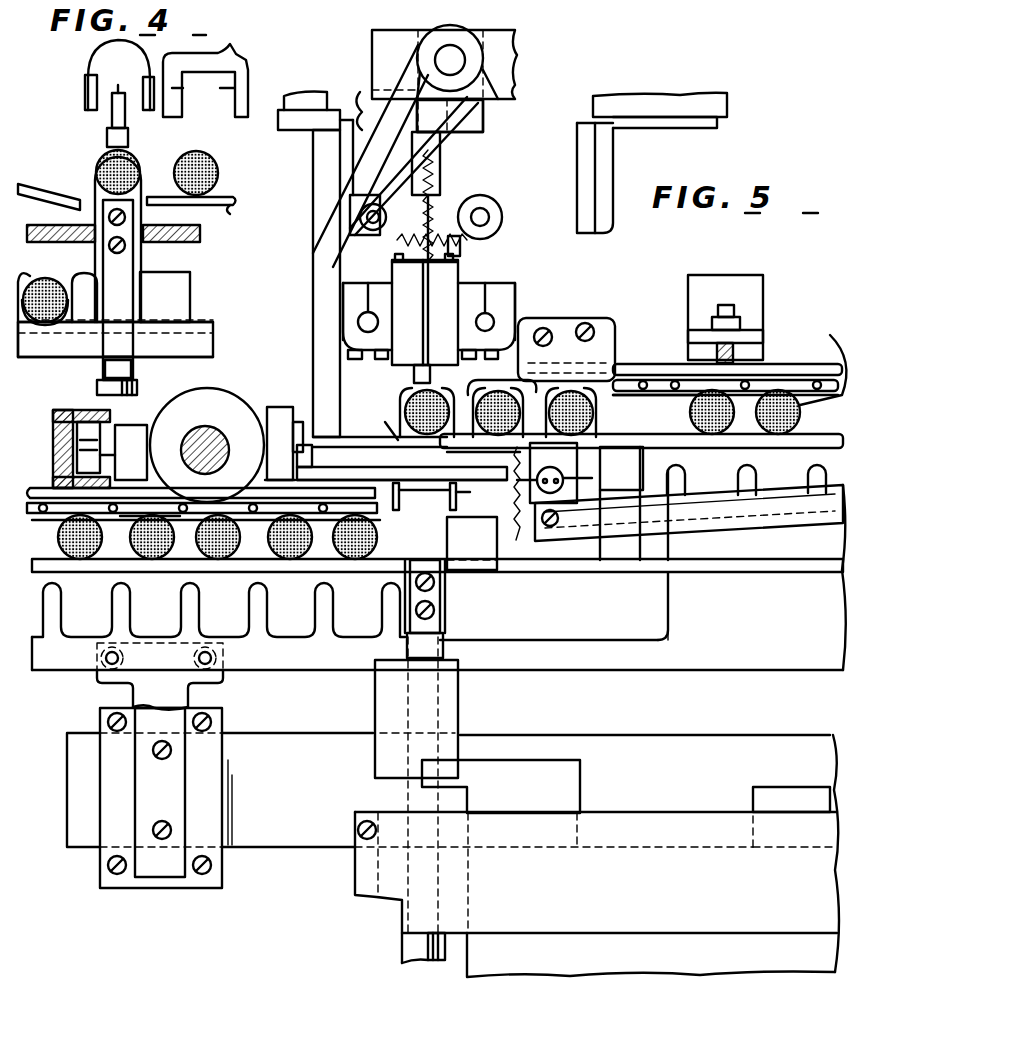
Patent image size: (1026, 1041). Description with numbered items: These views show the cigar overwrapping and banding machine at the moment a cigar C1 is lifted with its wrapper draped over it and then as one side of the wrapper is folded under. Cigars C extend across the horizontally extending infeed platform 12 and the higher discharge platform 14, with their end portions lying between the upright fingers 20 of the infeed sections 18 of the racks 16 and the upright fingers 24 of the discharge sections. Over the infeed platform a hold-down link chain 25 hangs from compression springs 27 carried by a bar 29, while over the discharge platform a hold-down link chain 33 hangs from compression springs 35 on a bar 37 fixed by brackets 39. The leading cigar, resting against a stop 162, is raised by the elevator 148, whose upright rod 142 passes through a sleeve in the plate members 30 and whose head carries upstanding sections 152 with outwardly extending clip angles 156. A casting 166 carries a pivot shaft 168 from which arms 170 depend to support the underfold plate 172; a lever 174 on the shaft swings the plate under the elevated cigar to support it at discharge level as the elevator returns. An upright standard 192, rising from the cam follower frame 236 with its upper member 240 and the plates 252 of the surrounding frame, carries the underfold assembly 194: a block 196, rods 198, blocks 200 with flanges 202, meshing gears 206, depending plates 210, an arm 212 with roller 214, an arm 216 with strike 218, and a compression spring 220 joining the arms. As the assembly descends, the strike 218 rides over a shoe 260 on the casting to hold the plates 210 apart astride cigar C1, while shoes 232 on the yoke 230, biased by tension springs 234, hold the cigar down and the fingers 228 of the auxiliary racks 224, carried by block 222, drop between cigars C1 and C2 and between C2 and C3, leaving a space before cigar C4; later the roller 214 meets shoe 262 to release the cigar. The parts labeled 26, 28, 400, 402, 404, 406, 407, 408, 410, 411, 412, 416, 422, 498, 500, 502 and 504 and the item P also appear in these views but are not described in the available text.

In FIG. 4, the infeed platform 12 is at (80, 340).
In FIG. 5, the infeed platform 12 is at (112, 567).
In FIG. 4, the discharge platform 14 is at (228, 210).
In FIG. 5, the discharge platform 14 is at (667, 441).
In FIG. 4, the racks 16 is at (213, 345).
In FIG. 5, the racks 16 is at (683, 603).
In FIG. 4, the infeed sections of the racks 18 is at (42, 342).
In FIG. 5, the infeed sections of the racks 18 is at (278, 658).
In FIG. 4, the fingers 20 is at (80, 280).
In FIG. 5, the fingers 20 is at (254, 589).
In FIG. 5, the fingers 24 is at (746, 472).
In FIG. 5, the hold-down link chain 25 is at (127, 513).
In FIG. 5, the bracket 26 is at (145, 692).
In FIG. 5, the compression springs 27 is at (58, 512).
In FIG. 5, the plate 28 is at (126, 892).
In FIG. 4, the bar 29 is at (34, 488).
In FIG. 5, the plate members 30 is at (82, 845).
In FIG. 5, the hold-down link chain 33 is at (641, 392).
In FIG. 5, the compression springs 35 is at (628, 372).
In FIG. 5, the bar 37 is at (797, 364).
In FIG. 5, the brackets 39 is at (766, 332).
In FIG. 4, the upright rod 142 is at (97, 385).
In FIG. 5, the upright rod 142 is at (432, 963).
In FIG. 4, the elevator 148 is at (116, 368).
In FIG. 5, the elevator 148 is at (424, 703).
In FIG. 4, the sections 152 is at (120, 280).
In FIG. 5, the sections 152 is at (434, 622).
In FIG. 4, the clip angles 156 is at (133, 206).
In FIG. 5, the clip angles 156 is at (427, 560).
In FIG. 4, the stop 162 is at (178, 293).
In FIG. 5, the stop 162 is at (472, 543).
In FIG. 4, the casting 166 is at (387, 47).
In FIG. 4, the pivot shaft 168 is at (457, 58).
In FIG. 4, the arms 170 is at (320, 250).
In FIG. 4, the underfold plate 172 is at (65, 193).
In FIG. 4, the lever 174 is at (360, 92).
In FIG. 4, the upright standard 192 is at (425, 312).
In FIG. 5, the upright standard 192 is at (433, 653).
In FIG. 4, the underfold assembly 194 is at (562, 257).
In FIG. 4, the block 196 is at (462, 297).
In FIG. 4, the rods 198 is at (360, 318).
In FIG. 4, the blocks 200 is at (350, 350).
In FIG. 4, the upright flange 202 is at (470, 272).
In FIG. 4, the meshing gears 206 is at (386, 265).
In FIG. 4, the plate 210 is at (400, 390).
In FIG. 4, the arm 212 is at (501, 228).
In FIG. 4, the roller 214 is at (490, 207).
In FIG. 4, the arm 216 is at (340, 215).
In FIG. 4, the strike 218 is at (350, 178).
In FIG. 4, the compression spring 220 is at (444, 217).
In FIG. 5, the block 222 is at (567, 348).
In FIG. 4, the auxiliary racks 224 is at (238, 58).
In FIG. 5, the auxiliary racks 224 is at (607, 325).
In FIG. 4, the fingers 228 is at (203, 85).
In FIG. 5, the fingers 228 is at (474, 395).
In FIG. 4, the yoke 230 is at (118, 86).
In FIG. 4, the shoes 232 is at (128, 136).
In FIG. 4, the tension springs 234 is at (433, 177).
In FIG. 5, the cam follower frame 236 is at (615, 958).
In FIG. 5, the upper member 240 is at (737, 947).
In FIG. 5, the plates 252 is at (636, 822).
In FIG. 4, the shoe 260 is at (333, 143).
In FIG. 5, the shoe 262 is at (588, 153).
In FIG. 4, the housing 400 is at (53, 448).
In FIG. 4, the insert 402 is at (97, 428).
In FIG. 4, the block 404 is at (129, 452).
In FIG. 4, the motor 406 is at (211, 393).
In FIG. 4, the shaft 407 is at (192, 440).
In FIG. 4, the bracket 408 is at (268, 410).
In FIG. 4, the base 410 is at (290, 456).
In FIG. 4, the plate 411 is at (63, 230).
In FIG. 4, the link 412 is at (463, 492).
In FIG. 4, the bar 416 is at (397, 470).
In FIG. 4, the post 422 is at (424, 496).
In FIG. 5, the plate 498 is at (712, 525).
In FIG. 5, the post 500 is at (672, 476).
In FIG. 5, the link 502 is at (456, 452).
In FIG. 5, the box 504 is at (585, 482).
In FIG. 4, the cigars C is at (44, 280).
In FIG. 5, the cigars C is at (796, 413).
In FIG. 4, the cigar C1 is at (112, 168).
In FIG. 5, the cigar C2 is at (514, 495).
In FIG. 5, the cigar C3 is at (585, 416).
In FIG. 5, the cigar C4 is at (823, 356).
In FIG. 5, the pin P is at (705, 403).